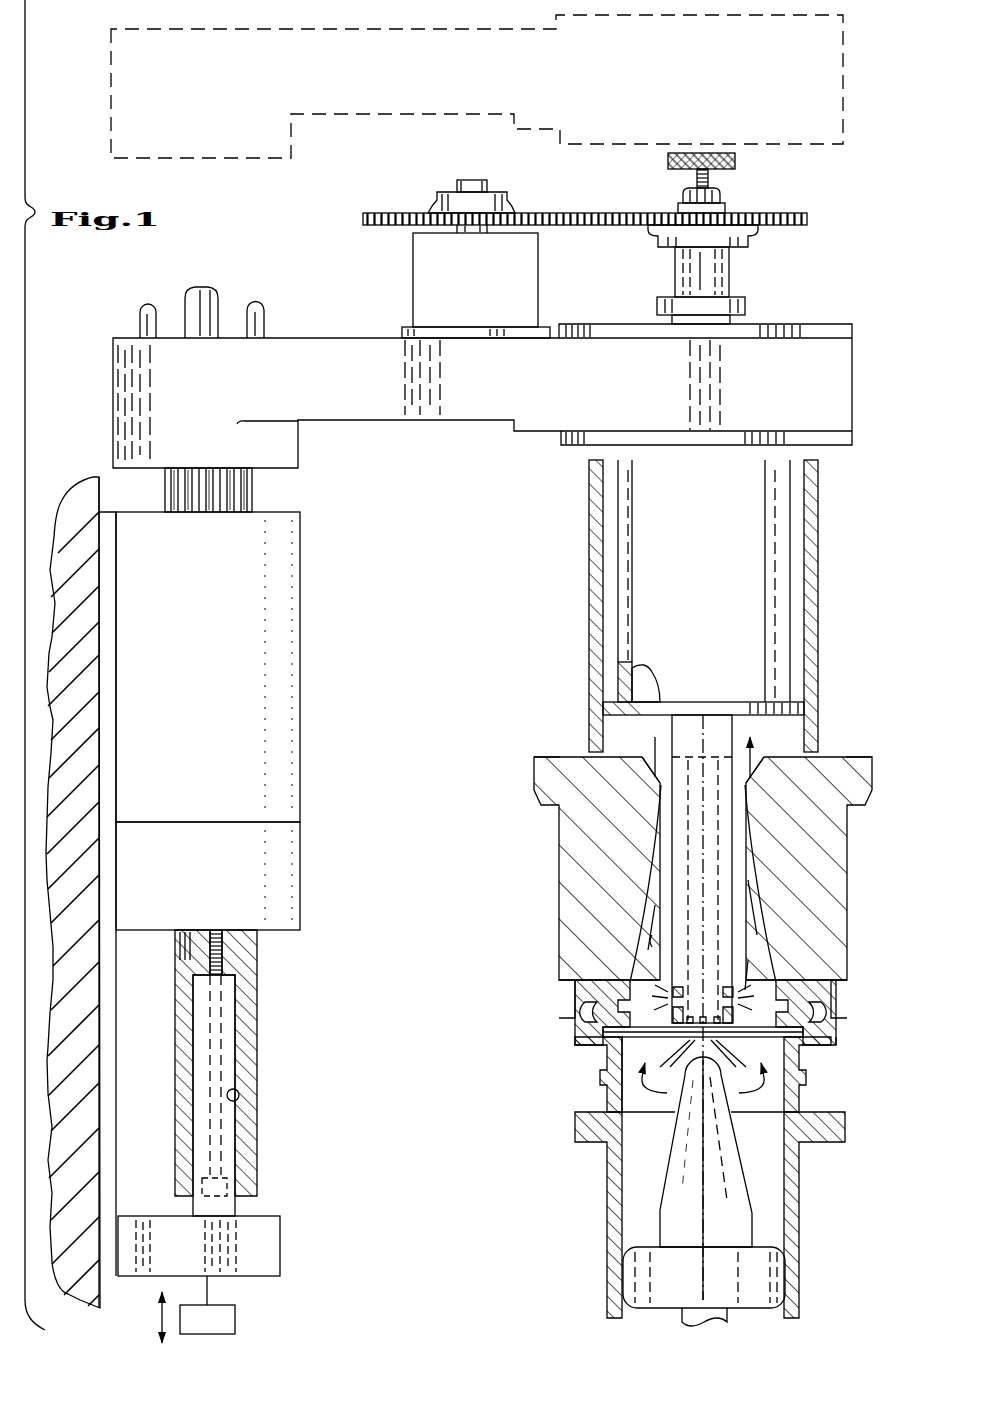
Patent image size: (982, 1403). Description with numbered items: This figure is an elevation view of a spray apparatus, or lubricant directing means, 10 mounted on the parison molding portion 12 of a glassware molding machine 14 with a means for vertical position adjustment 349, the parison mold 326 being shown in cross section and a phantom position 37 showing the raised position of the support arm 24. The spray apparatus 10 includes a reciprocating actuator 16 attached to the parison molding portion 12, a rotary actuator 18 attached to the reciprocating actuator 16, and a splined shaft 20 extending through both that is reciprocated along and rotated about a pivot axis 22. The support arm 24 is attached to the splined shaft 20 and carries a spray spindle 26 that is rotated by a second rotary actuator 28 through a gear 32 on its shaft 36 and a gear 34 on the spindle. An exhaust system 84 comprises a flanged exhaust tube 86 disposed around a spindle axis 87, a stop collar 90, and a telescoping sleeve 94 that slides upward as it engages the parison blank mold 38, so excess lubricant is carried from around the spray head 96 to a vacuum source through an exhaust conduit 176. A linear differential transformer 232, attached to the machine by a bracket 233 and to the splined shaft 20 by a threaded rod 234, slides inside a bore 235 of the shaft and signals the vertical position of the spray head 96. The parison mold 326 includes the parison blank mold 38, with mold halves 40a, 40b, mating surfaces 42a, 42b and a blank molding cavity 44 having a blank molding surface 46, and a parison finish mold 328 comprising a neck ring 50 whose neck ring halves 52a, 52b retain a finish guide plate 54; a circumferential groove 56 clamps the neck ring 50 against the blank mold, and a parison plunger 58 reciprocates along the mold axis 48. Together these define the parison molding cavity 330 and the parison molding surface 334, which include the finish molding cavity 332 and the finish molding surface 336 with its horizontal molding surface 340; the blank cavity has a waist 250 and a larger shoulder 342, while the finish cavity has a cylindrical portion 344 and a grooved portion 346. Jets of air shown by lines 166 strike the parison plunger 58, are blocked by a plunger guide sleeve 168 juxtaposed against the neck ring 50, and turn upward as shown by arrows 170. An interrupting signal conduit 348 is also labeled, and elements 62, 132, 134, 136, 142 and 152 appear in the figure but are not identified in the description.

The spray apparatus 10 is at (637, 893).
The parison molding portion 12 is at (100, 1019).
The glassware molding machine 14 is at (100, 1047).
The reciprocating actuator 16 is at (206, 693).
The rotary actuator 18 is at (208, 891).
The splined shaft 20 is at (252, 492).
The pivot axis 22 is at (215, 1143).
The support arm 24 is at (381, 391).
The spray spindle 26 is at (738, 234).
The rotary actuator 28 is at (482, 296).
The gear 32 is at (585, 201).
The gear 34 is at (630, 212).
The shaft 36 is at (483, 181).
The phantom position 37 is at (247, 30).
The parison blank mold 38 is at (670, 864).
The mold half 40a is at (541, 755).
The mold half 40b is at (868, 755).
The mating surface 42a is at (656, 828).
The mating surface 42b is at (700, 842).
The blank molding cavity 44 is at (655, 915).
The blank molding surface 46 is at (650, 935).
The mold axis 48 is at (705, 1152).
The neck ring 50 is at (633, 1191).
The neck ring half 52a is at (590, 1130).
The neck ring half 52b is at (805, 1105).
The finish guide plate 54 is at (574, 1043).
The circumferential groove 56 is at (574, 1028).
The parison plunger 58 is at (732, 1211).
The piston rod 62 is at (732, 728).
The exhaust system 84 is at (649, 606).
The flanged exhaust tube 86 is at (703, 575).
The spindle axis 87 is at (700, 270).
The stop collar 90 is at (693, 702).
The telescoping sleeve 94 is at (589, 670).
The spray head 96 is at (617, 1064).
The knob 132 is at (737, 161).
The threaded stem 134 is at (710, 178).
The nut 136 is at (720, 196).
The pin 142 is at (140, 318).
The pin 152 is at (264, 316).
The lines 166 is at (630, 1048).
The plunger guide sleeve 168 is at (606, 1252).
The arrows 170 is at (640, 1093).
The exhaust conduit 176 is at (218, 292).
The linear differential transformer 232 is at (225, 1047).
The bracket 233 is at (280, 1251).
The threaded rod 234 is at (242, 962).
The bore 235 is at (240, 1095).
The waist 250 is at (653, 872).
The parison mold 326 is at (653, 878).
The parison finish mold 328 is at (619, 1074).
The parison molding cavity 330 is at (745, 912).
The finish molding cavity 332 is at (745, 990).
The parison molding surface 334 is at (742, 878).
The finish molding surface 336 is at (838, 1012).
The horizontal molding surface 340 is at (799, 1058).
The shoulder 342 is at (655, 972).
The cylindrical portion 344 is at (790, 986).
The grooved portion 346 is at (760, 985).
The interrupting signal conduit 348 is at (574, 994).
The means for vertical position adjustment 349 is at (220, 1331).